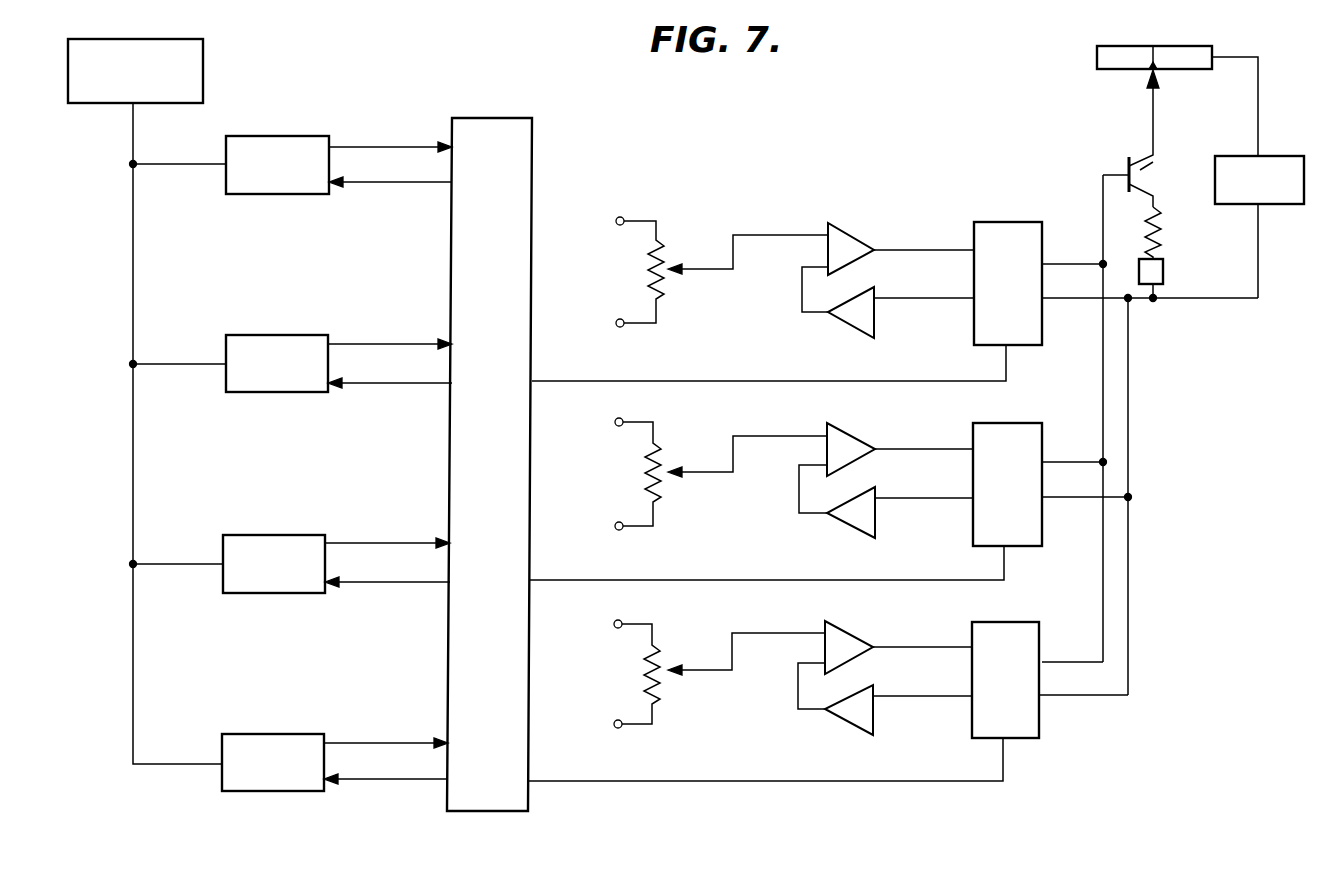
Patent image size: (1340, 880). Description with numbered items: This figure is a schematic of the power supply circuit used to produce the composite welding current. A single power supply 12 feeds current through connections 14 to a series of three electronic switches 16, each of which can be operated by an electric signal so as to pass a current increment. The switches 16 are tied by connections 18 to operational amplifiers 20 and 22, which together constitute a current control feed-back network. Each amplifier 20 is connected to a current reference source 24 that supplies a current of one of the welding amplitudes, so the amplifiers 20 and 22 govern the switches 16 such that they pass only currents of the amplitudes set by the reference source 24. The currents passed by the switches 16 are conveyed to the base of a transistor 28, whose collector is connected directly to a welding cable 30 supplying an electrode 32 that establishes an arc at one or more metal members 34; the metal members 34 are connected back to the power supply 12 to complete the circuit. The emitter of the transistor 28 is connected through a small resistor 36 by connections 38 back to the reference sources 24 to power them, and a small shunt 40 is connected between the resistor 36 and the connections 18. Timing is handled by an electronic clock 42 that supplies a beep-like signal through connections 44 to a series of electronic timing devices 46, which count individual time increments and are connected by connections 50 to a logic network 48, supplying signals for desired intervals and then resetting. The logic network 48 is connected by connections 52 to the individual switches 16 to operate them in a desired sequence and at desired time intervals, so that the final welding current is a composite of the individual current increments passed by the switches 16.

The power supply 12 is at (1270, 156).
The connections 14 is at (1256, 102).
The electronic switches 16 is at (988, 325).
The connections 18 is at (945, 246).
The operational amplifiers 20 is at (844, 242).
The operational amplifiers 22 is at (850, 318).
The current reference source 24 is at (650, 262).
The transistor 28 is at (1140, 176).
The welding cable 30 is at (1126, 168).
The electrode 32 is at (1148, 80).
The metal members 34 is at (1097, 60).
The resistor 36 is at (1160, 238).
The connections 38 is at (1090, 302).
The shunt 40 is at (1164, 270).
The electronic clock 42 is at (206, 72).
The connections 44 is at (198, 128).
The electronic timing devices 46 is at (280, 136).
The logic network 48 is at (514, 187).
The connections 50 is at (406, 146).
The connections 52 is at (733, 381).